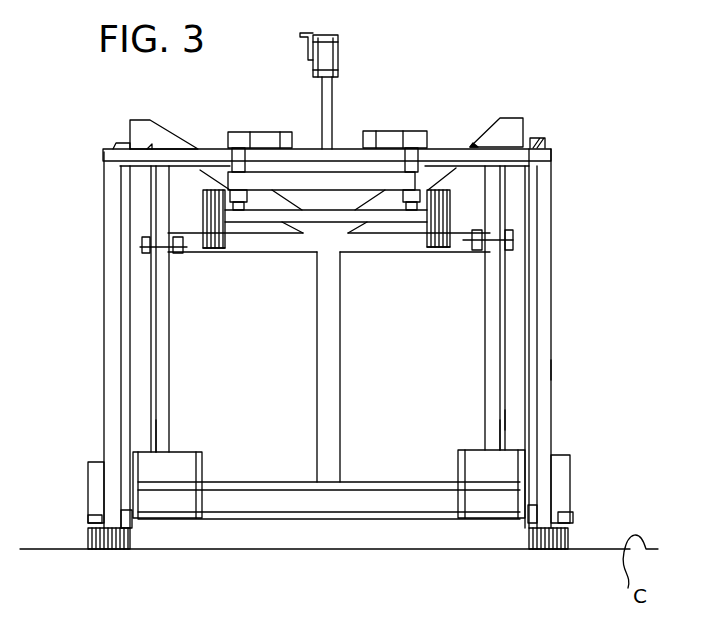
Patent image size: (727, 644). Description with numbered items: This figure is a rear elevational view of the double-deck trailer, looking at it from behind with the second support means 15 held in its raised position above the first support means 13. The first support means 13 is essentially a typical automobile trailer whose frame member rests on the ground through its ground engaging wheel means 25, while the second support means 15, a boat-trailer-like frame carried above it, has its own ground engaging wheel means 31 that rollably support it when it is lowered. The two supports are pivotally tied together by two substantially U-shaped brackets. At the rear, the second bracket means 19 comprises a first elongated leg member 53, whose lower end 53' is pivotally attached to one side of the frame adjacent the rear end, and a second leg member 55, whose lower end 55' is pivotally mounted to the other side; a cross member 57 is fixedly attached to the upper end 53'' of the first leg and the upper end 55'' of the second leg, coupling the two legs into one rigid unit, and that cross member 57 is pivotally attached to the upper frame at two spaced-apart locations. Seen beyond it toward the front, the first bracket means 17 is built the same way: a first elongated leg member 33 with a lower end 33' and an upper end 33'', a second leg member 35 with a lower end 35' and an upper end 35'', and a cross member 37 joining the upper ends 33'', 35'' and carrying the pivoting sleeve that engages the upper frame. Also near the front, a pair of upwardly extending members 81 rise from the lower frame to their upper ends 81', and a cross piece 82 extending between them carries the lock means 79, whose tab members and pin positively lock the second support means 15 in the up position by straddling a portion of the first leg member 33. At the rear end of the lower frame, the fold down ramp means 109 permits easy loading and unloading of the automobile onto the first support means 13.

The first support means 13 is at (328, 522).
The second support means 15 is at (388, 189).
The first bracket means 17 is at (513, 417).
The second bracket means 19 is at (556, 370).
The ground engaging wheel means 25 is at (110, 553).
The ground engaging wheel means 31 is at (212, 254).
The first elongated leg member 33 is at (470, 308).
The lower end of first leg member 33' is at (471, 427).
The upper end of first leg member 33'' is at (460, 216).
The second leg member 35 is at (185, 309).
The lower end of second leg member 35' is at (193, 427).
The upper end of second leg member 35'' is at (199, 215).
The cross member 37 is at (233, 168).
The first elongated leg member 53 is at (585, 338).
The lower end of first leg member 53' is at (586, 489).
The upper end of first leg member 53'' is at (570, 159).
The second leg member 55 is at (79, 340).
The lower end of second leg member 55' is at (79, 495).
The upper end of second leg member 55'' is at (125, 142).
The cross member 57 is at (443, 149).
The lock means 79 is at (139, 258).
The upwardly extending members 81 is at (321, 347).
The upper end of upwardly extending member 81' is at (519, 115).
The cross piece 82 is at (273, 250).
The fold down ramp means 109 is at (203, 473).